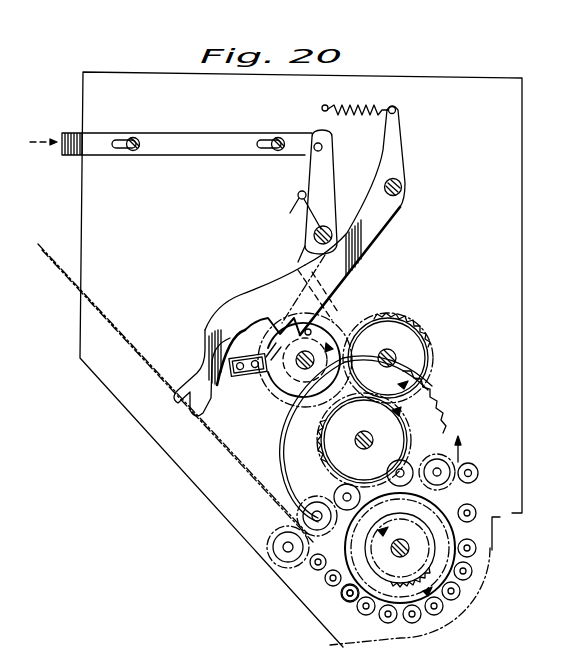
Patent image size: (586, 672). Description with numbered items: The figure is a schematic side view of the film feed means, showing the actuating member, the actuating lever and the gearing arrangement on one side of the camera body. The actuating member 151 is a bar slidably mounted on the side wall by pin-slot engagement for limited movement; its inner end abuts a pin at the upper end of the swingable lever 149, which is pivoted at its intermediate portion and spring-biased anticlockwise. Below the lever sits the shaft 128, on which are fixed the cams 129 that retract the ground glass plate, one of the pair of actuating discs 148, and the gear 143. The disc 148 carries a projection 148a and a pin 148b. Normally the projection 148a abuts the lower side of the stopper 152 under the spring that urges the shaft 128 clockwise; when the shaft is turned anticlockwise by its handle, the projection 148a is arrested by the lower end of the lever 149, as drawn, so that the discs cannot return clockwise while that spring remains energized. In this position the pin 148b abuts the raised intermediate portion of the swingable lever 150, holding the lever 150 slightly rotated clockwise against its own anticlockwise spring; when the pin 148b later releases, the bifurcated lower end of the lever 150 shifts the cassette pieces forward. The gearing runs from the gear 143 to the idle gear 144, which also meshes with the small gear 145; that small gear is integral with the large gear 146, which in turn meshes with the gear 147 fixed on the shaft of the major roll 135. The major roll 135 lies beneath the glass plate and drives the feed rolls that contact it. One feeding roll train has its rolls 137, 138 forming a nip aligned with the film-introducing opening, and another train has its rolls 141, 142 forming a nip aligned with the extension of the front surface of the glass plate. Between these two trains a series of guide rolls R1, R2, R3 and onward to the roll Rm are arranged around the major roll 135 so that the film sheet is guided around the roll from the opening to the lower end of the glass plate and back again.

The actuating member 151 is at (163, 140).
The swingable lever 149 is at (306, 168).
The swingable lever 150 is at (398, 144).
The projection 148a is at (257, 327).
The pin 148b is at (322, 328).
The actuating disc 148 is at (282, 366).
The stopper 152 is at (222, 362).
The shaft 128 is at (296, 368).
The cam 129 is at (282, 422).
The gear 143 is at (377, 318).
The idle gear 144 is at (407, 335).
The small gear 145 is at (423, 395).
The large gear 146 is at (448, 410).
The feeding roll 141 is at (436, 440).
The feeding roll 142 is at (495, 462).
The guide roll Rm is at (477, 515).
The major roll 135 is at (470, 537).
The gear 147 is at (445, 534).
The feeding roll 138 is at (290, 497).
The feeding roll 137 is at (270, 543).
The guide roll R1 is at (302, 573).
The guide roll R2 is at (324, 589).
The guide roll R3 is at (350, 612).